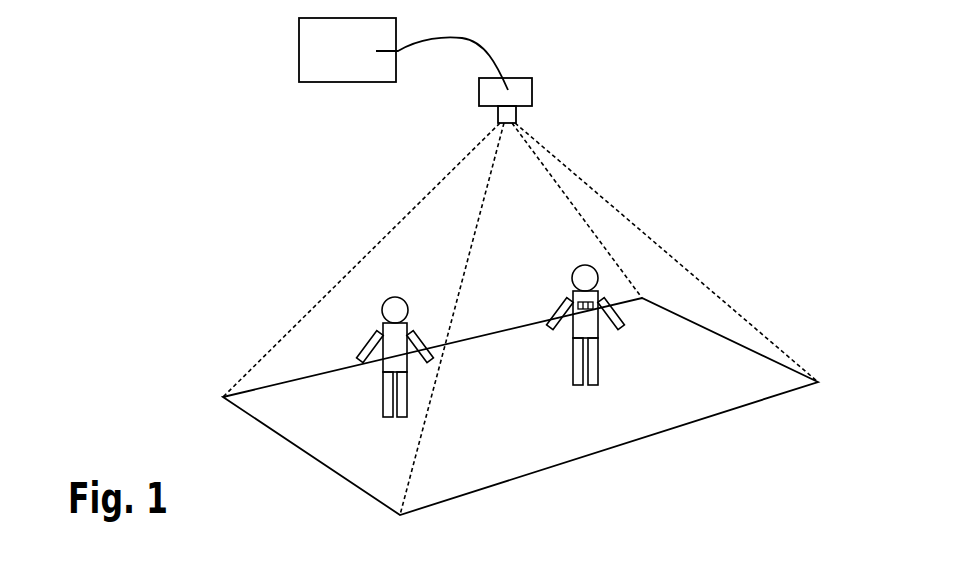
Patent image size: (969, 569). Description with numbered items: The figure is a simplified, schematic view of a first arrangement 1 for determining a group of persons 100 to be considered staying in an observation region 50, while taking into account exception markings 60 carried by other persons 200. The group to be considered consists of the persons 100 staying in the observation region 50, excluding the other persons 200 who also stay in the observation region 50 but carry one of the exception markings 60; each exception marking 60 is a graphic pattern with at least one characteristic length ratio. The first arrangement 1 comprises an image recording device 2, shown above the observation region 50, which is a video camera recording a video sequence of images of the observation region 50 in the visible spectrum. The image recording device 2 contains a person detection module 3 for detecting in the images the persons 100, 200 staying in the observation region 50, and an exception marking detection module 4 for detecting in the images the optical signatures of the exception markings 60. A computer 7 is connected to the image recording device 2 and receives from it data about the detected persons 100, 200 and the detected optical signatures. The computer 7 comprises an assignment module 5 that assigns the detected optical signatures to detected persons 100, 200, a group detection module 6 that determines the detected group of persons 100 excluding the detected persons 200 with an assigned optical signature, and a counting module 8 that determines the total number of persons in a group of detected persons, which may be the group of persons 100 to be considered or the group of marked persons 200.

The first arrangement 1 is at (645, 88).
The image recording device 2 is at (488, 98).
The person detection module 3 is at (517, 83).
The exception marking detection module 4 is at (528, 93).
The assignment module 5 is at (315, 80).
The group detection module 6 is at (348, 67).
The computer 7 is at (320, 65).
The counting module 8 is at (377, 78).
The observation region 50 is at (538, 455).
The exception marking 60 is at (600, 307).
The persons to be considered 100 is at (390, 352).
The other persons 200 is at (597, 280).